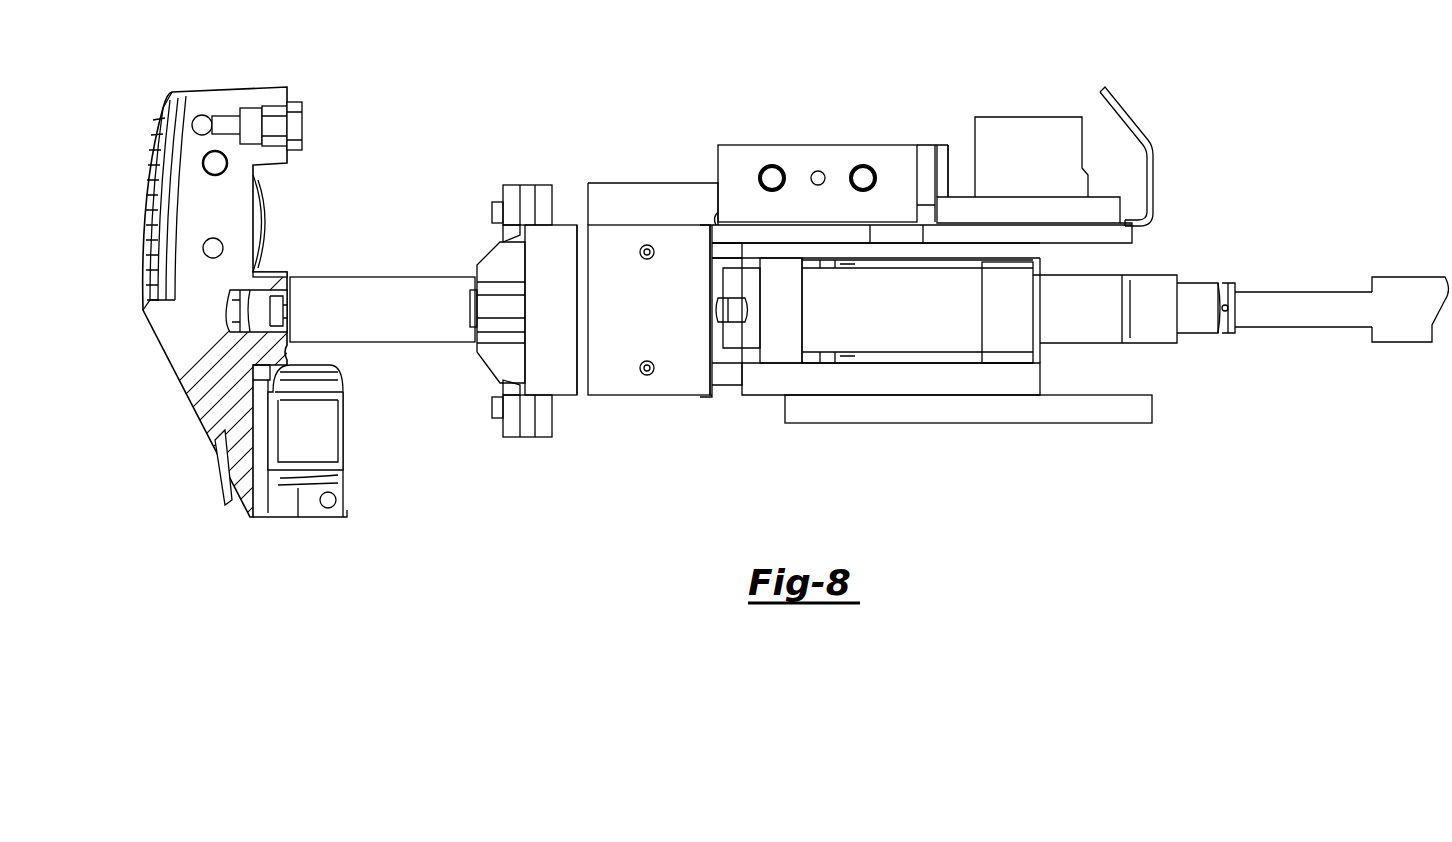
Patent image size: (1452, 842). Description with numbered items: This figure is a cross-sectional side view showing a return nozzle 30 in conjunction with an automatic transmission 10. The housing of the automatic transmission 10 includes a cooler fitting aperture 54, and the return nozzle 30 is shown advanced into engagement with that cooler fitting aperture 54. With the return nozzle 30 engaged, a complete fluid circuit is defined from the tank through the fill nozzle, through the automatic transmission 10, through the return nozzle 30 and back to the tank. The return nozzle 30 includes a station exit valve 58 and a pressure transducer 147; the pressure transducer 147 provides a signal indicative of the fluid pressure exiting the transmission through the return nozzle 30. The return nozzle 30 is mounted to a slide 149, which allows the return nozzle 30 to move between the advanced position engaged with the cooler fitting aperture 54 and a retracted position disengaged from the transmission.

The automatic transmission 10 is at (300, 69).
The cooler fitting aperture 54 is at (272, 292).
The return nozzle 30 is at (623, 446).
The pressure transducer 147 is at (807, 142).
The station exit valve 58 is at (1037, 128).
The slide 149 is at (888, 407).